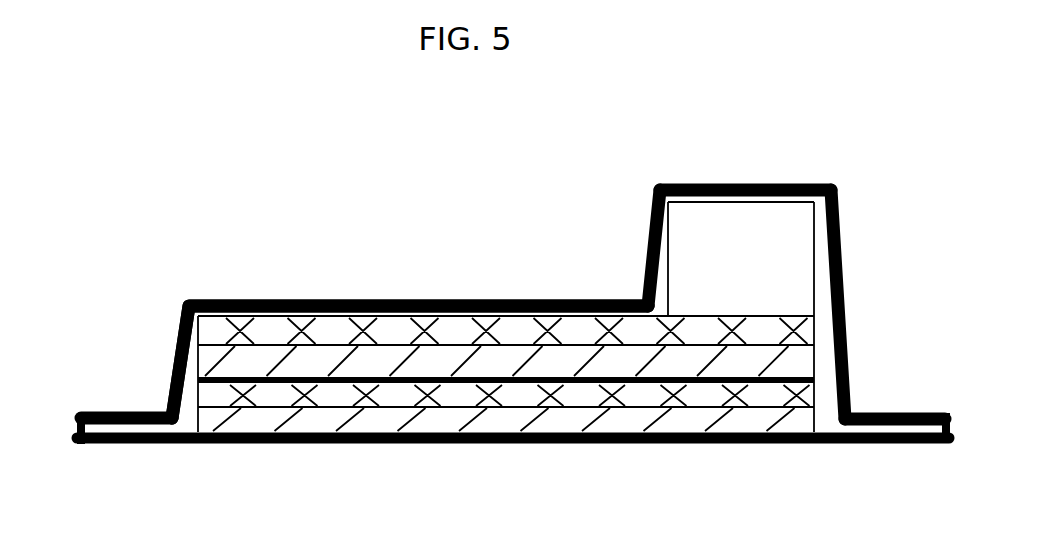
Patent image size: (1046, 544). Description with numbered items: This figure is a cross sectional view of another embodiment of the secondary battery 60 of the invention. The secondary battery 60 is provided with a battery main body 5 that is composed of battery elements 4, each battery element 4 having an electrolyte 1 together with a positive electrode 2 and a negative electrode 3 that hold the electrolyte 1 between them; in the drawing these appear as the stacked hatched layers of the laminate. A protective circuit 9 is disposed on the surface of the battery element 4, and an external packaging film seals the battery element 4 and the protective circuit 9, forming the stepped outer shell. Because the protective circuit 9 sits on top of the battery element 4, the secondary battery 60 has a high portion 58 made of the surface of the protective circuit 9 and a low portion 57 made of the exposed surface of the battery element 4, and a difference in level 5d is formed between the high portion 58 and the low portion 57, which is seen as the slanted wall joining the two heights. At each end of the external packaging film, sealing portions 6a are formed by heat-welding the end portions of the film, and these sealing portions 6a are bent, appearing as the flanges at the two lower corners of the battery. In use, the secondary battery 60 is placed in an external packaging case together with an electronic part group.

The electrolyte 1 is at (265, 345).
The positive electrode 2 is at (318, 330).
The negative electrode 3 is at (363, 367).
The battery element 4 is at (506, 301).
The battery main body 5 is at (388, 232).
The secondary battery 60 is at (513, 295).
The difference in level 5d is at (642, 253).
The low portion 57 is at (512, 316).
The high portion 58 is at (752, 202).
The protective circuit 9 is at (782, 265).
The sealing portion 6a is at (120, 412).